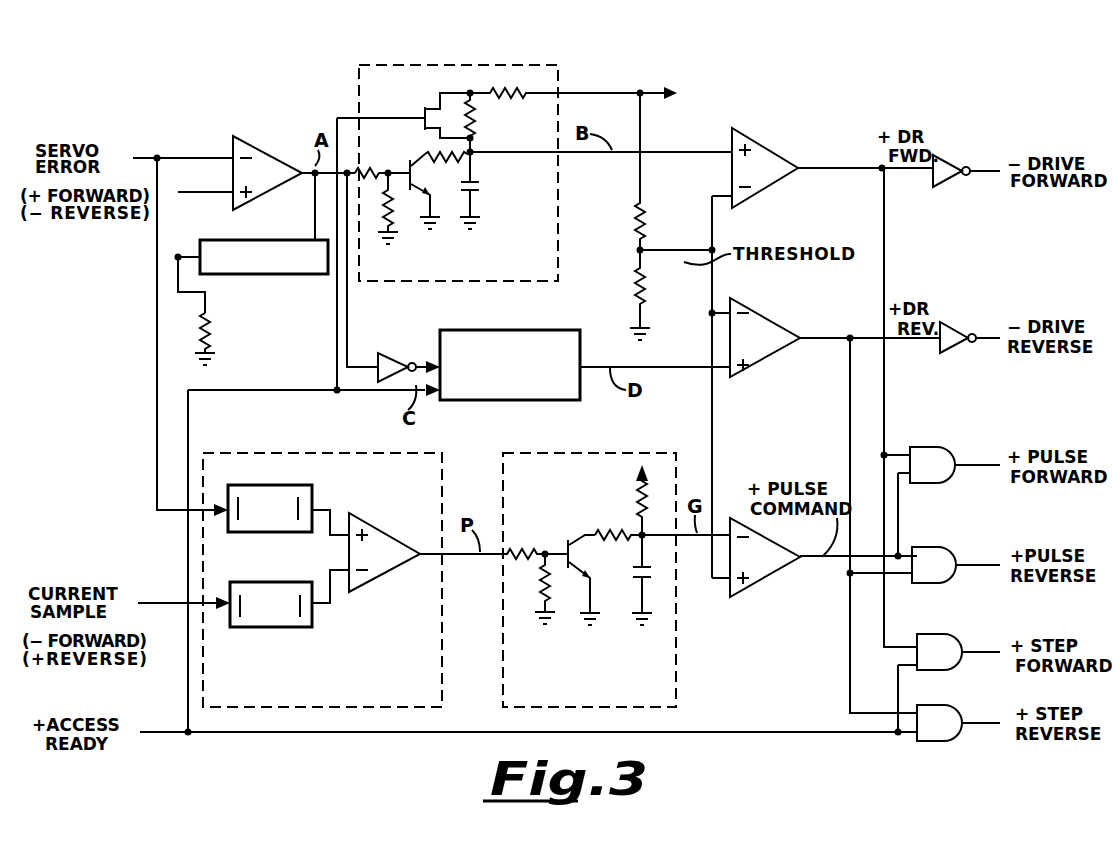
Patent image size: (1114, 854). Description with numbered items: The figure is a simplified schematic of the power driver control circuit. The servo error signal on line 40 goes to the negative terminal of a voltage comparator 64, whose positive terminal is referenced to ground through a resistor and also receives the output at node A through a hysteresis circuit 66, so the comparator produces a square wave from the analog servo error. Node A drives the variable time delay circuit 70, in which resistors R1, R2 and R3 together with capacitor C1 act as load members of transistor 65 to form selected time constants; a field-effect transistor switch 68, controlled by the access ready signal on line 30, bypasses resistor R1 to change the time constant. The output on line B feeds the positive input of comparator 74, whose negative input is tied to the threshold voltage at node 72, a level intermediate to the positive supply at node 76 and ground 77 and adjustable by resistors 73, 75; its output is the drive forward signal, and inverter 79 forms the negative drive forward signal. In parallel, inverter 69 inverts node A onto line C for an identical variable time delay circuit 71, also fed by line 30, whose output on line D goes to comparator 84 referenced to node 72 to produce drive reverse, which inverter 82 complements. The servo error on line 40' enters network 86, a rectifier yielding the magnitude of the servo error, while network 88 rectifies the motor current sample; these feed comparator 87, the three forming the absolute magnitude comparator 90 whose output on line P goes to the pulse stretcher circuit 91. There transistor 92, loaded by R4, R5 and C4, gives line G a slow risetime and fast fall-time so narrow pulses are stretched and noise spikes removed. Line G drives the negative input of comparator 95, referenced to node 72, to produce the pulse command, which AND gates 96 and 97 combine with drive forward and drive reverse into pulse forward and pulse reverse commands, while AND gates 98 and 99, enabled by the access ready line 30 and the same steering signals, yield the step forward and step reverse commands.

The access ready line 30 is at (243, 390).
The servo error signal line 40 is at (176, 141).
The servo error signal line branch 40' is at (171, 343).
The voltage comparator 64 is at (266, 152).
The transistor 65 is at (410, 166).
The hysteresis circuit 66 is at (250, 276).
The field-effect transistor switch 68 is at (425, 112).
The inverter 69 is at (386, 356).
The variable time delay circuit 70 is at (559, 208).
The variable time delay circuit 71 is at (497, 330).
The threshold voltage node 72 is at (638, 252).
The resistor 73 is at (645, 212).
The voltage comparator 74 is at (765, 148).
The resistor 75 is at (645, 286).
The positive supply node 76 is at (642, 90).
The ground 77 is at (648, 322).
The inverter 79 is at (950, 158).
The inverter 82 is at (952, 352).
The comparator 84 is at (765, 318).
The network 86 is at (313, 493).
The comparator 87 is at (380, 530).
The network 88 is at (262, 582).
The absolute magnitude comparator 90 is at (443, 612).
The pulse stretcher circuit 91 is at (677, 698).
The transistor 92 is at (567, 540).
The comparator 95 is at (772, 578).
The AND gate 96 is at (935, 448).
The AND gate 97 is at (938, 548).
The AND gate 98 is at (945, 635).
The AND gate 99 is at (948, 706).
The resistor R1 is at (476, 128).
The resistor R2 is at (516, 96).
The resistor R3 is at (432, 158).
The resistor R4 is at (645, 508).
The resistor R5 is at (622, 530).
The capacitor C1 is at (480, 186).
The capacitor C4 is at (637, 577).